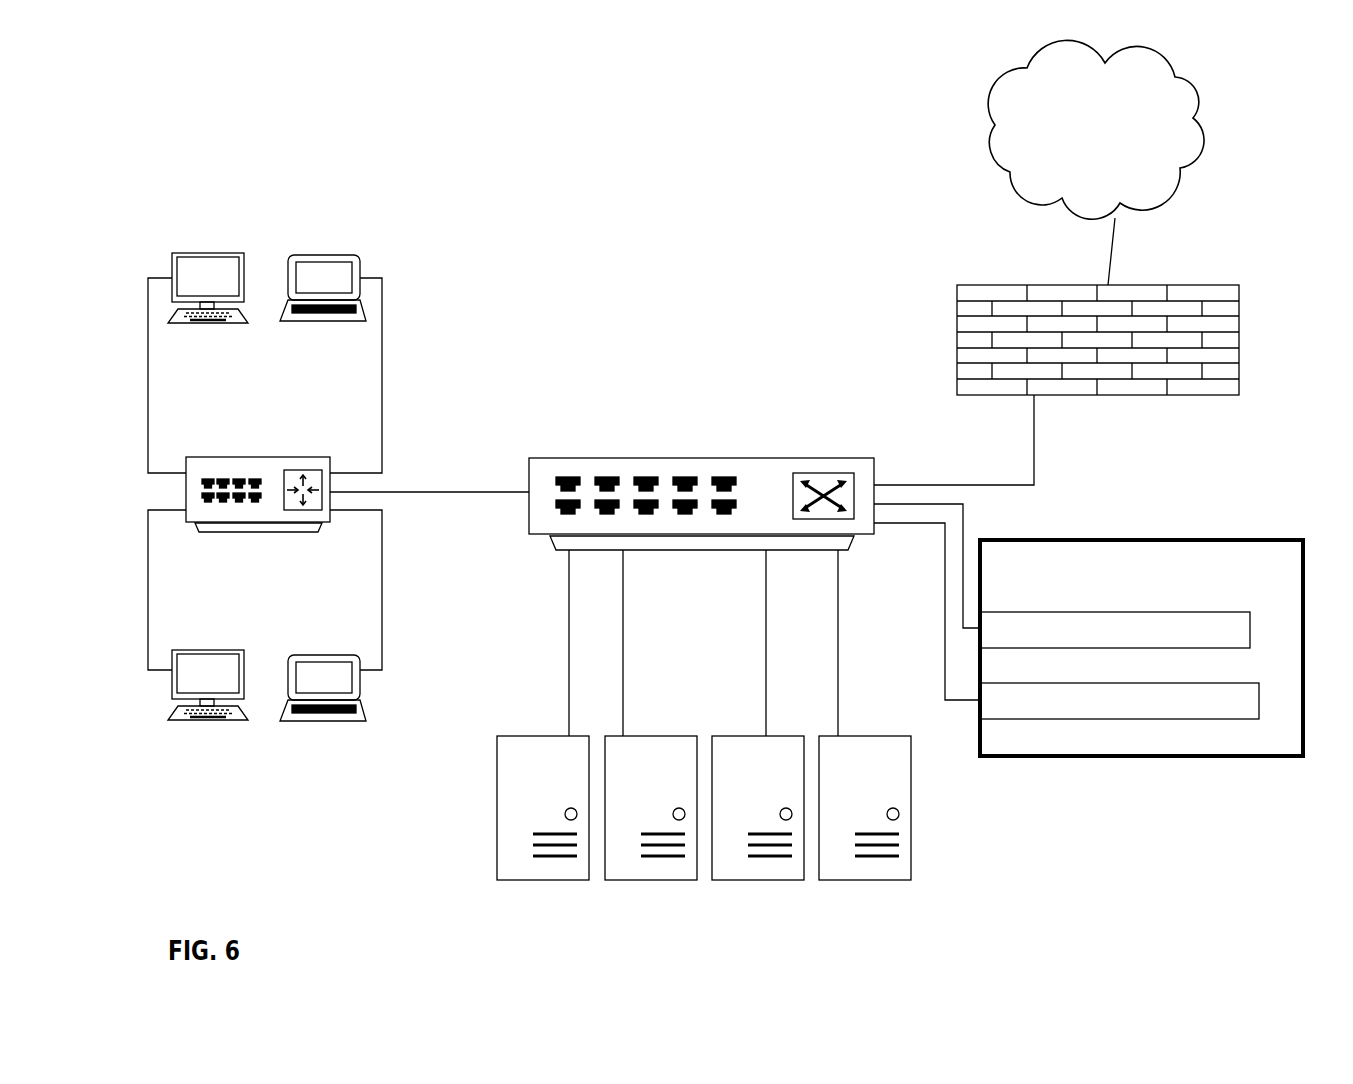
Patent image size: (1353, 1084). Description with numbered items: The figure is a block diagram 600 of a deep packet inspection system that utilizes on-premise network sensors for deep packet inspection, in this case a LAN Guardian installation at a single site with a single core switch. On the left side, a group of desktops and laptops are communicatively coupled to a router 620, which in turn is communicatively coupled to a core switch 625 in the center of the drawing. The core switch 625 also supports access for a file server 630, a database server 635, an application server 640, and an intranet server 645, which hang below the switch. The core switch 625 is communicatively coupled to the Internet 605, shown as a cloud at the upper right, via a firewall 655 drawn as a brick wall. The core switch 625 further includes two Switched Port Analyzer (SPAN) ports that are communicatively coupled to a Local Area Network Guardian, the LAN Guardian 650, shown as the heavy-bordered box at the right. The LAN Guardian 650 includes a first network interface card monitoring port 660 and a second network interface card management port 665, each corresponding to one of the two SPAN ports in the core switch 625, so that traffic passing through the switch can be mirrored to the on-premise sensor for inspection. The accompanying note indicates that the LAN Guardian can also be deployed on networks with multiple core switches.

The block diagram 600 is at (136, 103).
The Internet 605 is at (1081, 153).
The router 620 is at (241, 629).
The core switch 625 is at (683, 700).
The file server 630 is at (525, 956).
The database server 635 is at (633, 956).
The application server 640 is at (739, 956).
The intranet server 645 is at (847, 956).
The LAN Guardian 650 is at (1124, 593).
The firewall 655 is at (1082, 460).
The NIC 1: Monitoring Port 660 is at (1234, 639).
The NIC 2: Management Port 665 is at (1248, 711).